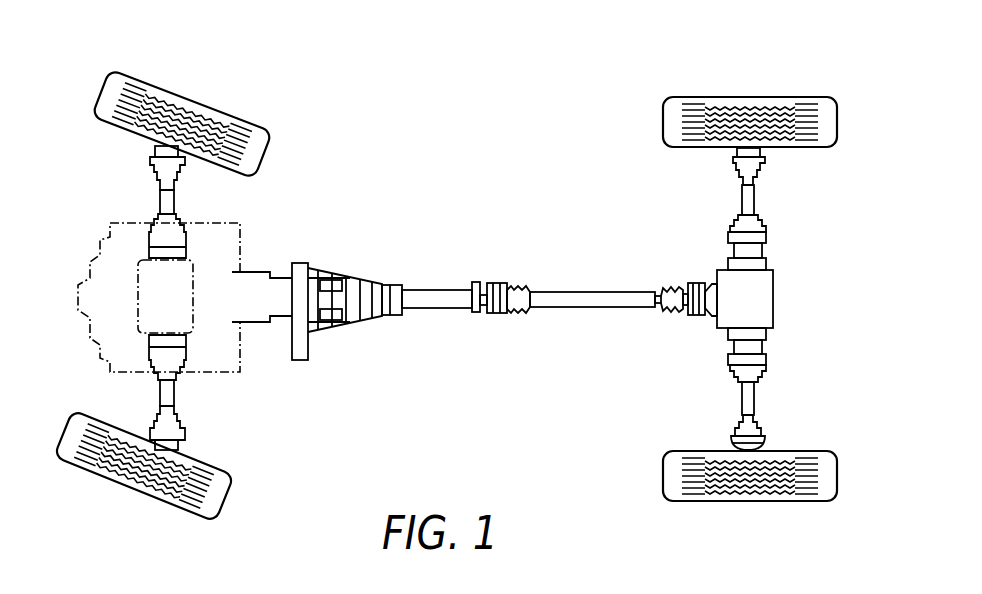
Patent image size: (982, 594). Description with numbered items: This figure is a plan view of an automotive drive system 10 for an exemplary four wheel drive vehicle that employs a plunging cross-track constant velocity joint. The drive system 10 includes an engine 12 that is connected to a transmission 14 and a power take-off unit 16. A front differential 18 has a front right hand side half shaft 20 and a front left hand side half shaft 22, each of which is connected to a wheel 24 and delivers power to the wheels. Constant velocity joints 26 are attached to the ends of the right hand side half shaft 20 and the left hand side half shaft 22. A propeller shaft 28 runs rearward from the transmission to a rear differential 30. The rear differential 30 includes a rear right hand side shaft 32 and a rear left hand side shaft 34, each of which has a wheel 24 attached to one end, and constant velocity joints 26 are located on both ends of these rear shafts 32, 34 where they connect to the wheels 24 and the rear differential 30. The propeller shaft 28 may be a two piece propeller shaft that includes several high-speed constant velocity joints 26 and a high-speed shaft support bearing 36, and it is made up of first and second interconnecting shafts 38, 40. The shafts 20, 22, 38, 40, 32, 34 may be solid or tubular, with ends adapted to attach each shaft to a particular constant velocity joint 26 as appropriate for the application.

The drive system 10 is at (436, 170).
The engine 12 is at (121, 240).
The transmission 14 is at (238, 273).
The power take-off unit 16 is at (300, 272).
The front differential 18 is at (137, 320).
The front right hand side half shaft 20 is at (160, 196).
The front left hand side half shaft 22 is at (176, 398).
The wheel 24 is at (118, 78).
The constant velocity joint 26 is at (178, 165).
The propeller shaft 28 is at (518, 244).
The rear differential 30 is at (770, 298).
The rear right hand side shaft 32 is at (755, 200).
The rear left hand side shaft 34 is at (755, 400).
The high-speed shaft support bearing 36 is at (477, 315).
The first interconnecting shaft 38 is at (433, 290).
The second interconnecting shaft 40 is at (600, 292).